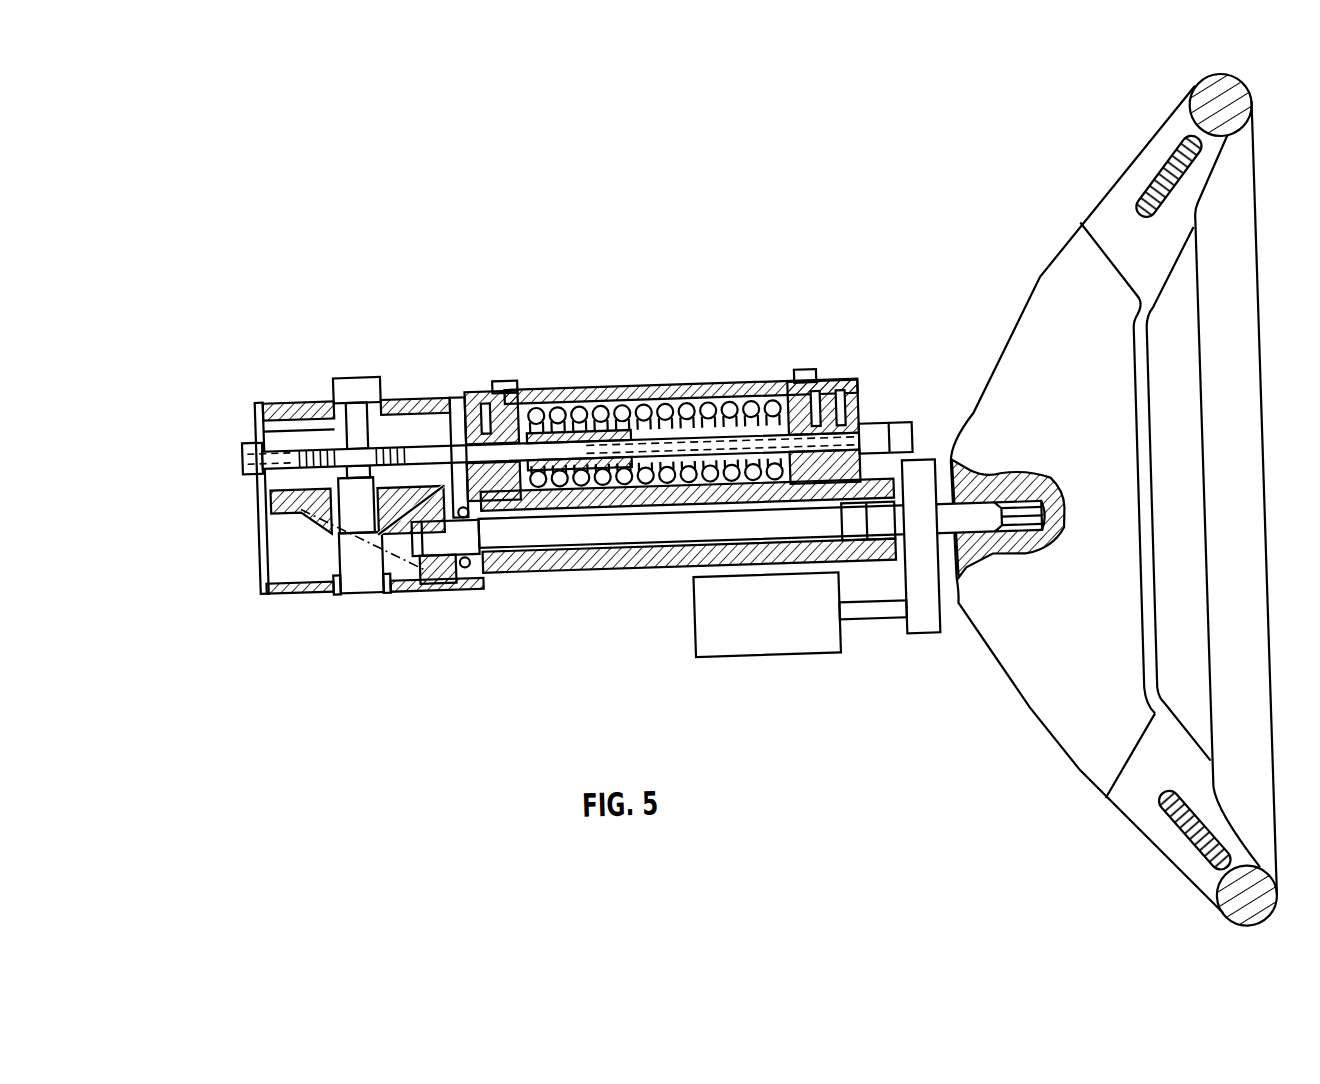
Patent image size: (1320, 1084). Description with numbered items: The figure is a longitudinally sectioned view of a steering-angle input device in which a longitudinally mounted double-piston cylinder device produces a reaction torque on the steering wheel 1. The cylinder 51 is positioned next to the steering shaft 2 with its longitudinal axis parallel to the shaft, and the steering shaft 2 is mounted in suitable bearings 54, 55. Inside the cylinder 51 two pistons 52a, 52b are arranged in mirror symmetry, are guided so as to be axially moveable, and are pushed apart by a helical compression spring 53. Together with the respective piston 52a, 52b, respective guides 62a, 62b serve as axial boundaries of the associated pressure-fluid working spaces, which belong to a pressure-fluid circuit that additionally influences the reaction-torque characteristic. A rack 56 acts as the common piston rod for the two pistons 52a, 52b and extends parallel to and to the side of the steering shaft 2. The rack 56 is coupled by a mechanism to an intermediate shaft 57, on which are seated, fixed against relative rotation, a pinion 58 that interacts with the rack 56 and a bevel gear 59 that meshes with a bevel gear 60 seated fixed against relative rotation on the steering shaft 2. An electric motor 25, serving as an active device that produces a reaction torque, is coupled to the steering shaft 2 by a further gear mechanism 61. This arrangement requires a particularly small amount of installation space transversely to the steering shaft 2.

The steering wheel 1 is at (1062, 312).
The steering shaft 2 is at (610, 530).
The electric motor 25 is at (770, 642).
The cylinder 51 is at (543, 396).
The piston 52a is at (557, 393).
The piston 52b is at (741, 440).
The helical compression spring 53 is at (585, 430).
The bearing 54 is at (874, 510).
The bearing 55 is at (469, 502).
The rack 56 is at (345, 452).
The intermediate shaft 57 is at (342, 570).
The pinion 58 is at (345, 455).
The bevel gear 59 is at (282, 490).
The bevel gear 60 is at (424, 573).
The gear mechanism 61 is at (936, 592).
The guide 62a is at (479, 401).
The guide 62b is at (832, 397).